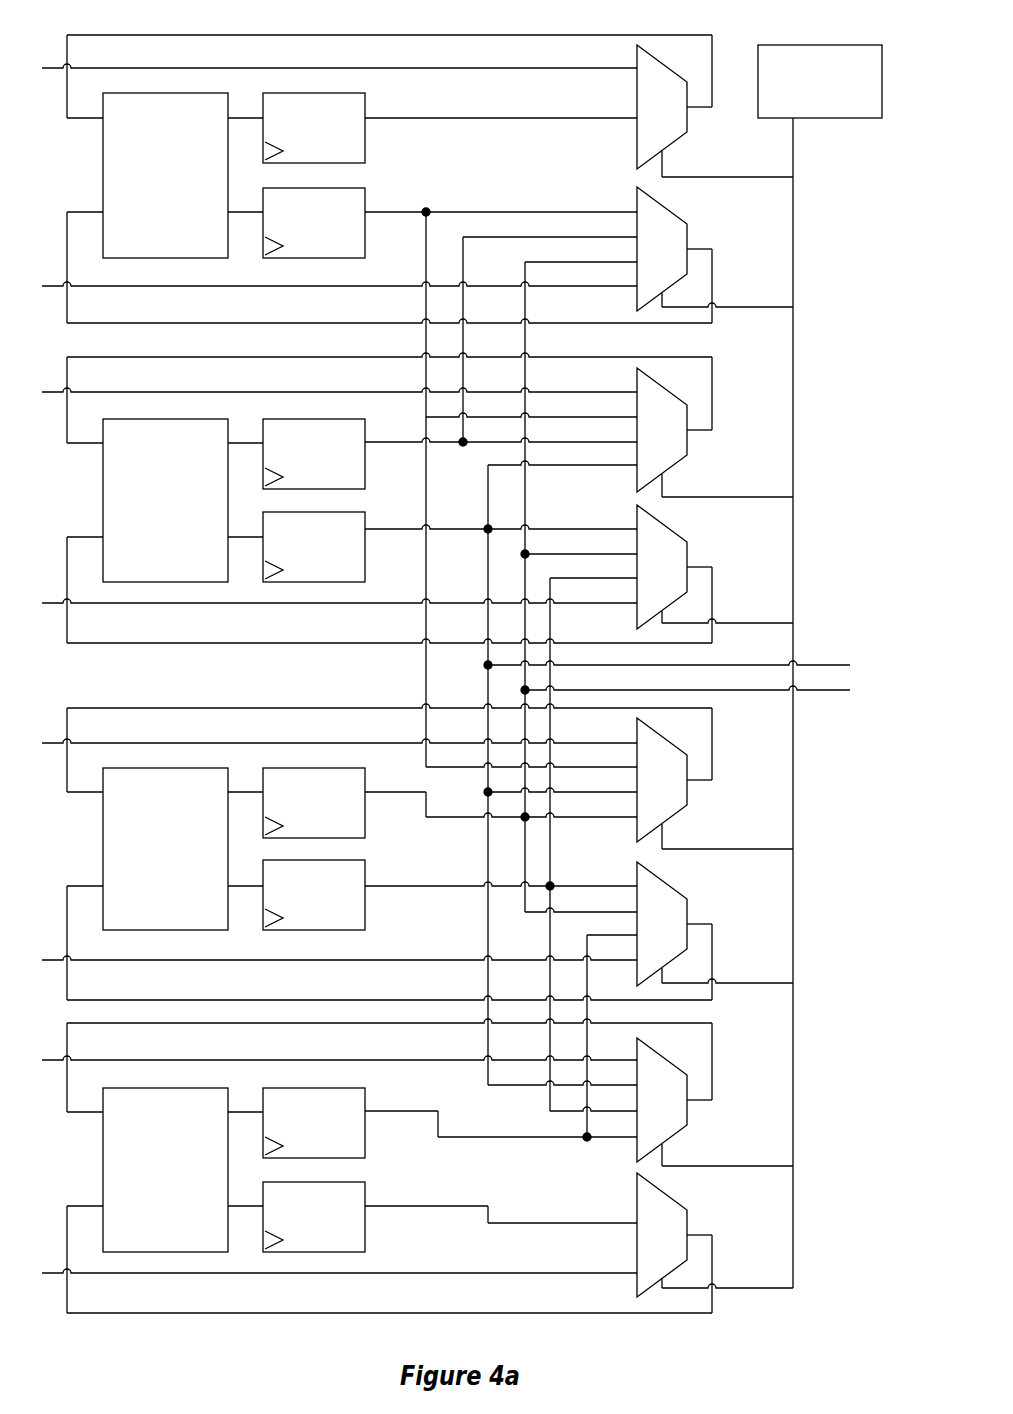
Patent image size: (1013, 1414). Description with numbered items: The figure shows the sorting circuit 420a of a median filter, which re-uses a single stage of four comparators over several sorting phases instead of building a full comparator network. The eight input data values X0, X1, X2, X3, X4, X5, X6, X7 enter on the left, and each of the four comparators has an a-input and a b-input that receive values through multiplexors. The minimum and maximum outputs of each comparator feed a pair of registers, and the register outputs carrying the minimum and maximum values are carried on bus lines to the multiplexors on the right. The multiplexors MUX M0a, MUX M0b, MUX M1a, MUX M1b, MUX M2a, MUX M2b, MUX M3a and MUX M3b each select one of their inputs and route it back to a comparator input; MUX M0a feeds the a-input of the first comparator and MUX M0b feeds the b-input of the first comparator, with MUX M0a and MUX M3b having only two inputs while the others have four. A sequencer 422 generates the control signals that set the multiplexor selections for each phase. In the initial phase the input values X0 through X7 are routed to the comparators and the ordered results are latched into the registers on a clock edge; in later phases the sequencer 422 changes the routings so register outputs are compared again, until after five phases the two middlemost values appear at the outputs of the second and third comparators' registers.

The sequencer 422 is at (820, 653).
The sorting circuit 420a is at (457, 690).
The MUX M0a is at (674, 107).
The MUX M0b is at (674, 249).
The MUX M1a is at (674, 430).
The MUX M1b is at (674, 567).
The MUX M2a is at (674, 780).
The MUX M2b is at (674, 924).
The MUX M3a is at (674, 1100).
The MUX M3b is at (674, 1235).
The input data value x0 X0 is at (324, 72).
The input data value x1 X1 is at (324, 290).
The input data value x2 X2 is at (324, 396).
The input data value x3 X3 is at (324, 607).
The input data value x4 X4 is at (324, 747).
The input data value x5 X5 is at (324, 964).
The input data value x6 X6 is at (324, 1064).
The input data value x7 X7 is at (324, 1277).